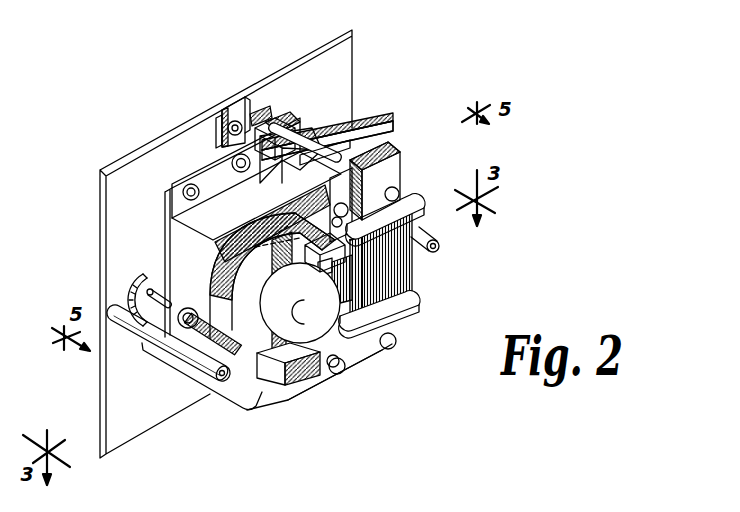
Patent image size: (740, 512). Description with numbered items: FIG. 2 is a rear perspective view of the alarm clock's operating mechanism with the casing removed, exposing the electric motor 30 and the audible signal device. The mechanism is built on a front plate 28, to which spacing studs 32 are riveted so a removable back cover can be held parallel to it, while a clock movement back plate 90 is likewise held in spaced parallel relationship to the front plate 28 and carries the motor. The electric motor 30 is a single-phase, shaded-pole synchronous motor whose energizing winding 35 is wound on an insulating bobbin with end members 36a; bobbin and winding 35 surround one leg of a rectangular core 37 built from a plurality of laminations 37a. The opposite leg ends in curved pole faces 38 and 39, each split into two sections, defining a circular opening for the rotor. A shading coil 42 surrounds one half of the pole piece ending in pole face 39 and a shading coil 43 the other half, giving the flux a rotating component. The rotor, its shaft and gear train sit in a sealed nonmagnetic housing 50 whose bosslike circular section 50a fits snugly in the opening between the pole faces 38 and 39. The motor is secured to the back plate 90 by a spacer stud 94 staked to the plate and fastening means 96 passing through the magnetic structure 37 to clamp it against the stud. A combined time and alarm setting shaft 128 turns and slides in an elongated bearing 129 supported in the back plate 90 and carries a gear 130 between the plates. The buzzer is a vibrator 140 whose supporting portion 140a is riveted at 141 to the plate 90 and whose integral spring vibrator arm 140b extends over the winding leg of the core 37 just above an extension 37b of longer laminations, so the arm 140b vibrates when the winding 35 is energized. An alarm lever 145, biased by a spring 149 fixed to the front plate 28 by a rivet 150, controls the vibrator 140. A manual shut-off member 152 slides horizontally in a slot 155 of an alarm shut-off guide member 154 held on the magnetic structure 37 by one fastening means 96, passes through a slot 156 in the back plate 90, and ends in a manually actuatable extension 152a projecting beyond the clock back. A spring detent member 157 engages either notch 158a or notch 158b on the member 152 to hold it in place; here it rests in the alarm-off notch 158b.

The front plate 28 is at (126, 160).
The electric motor 30 is at (366, 368).
The spacing studs 32 is at (190, 358).
The energizing winding 35 is at (415, 275).
The end members 36a is at (414, 200).
The laminated core 37 is at (383, 352).
The laminations 37a is at (268, 246).
The lamination extension 37b is at (384, 157).
The pole face 38 is at (300, 306).
The pole face 39 is at (290, 322).
The shading coil 42 is at (336, 268).
The shading coil 43 is at (290, 386).
The rotor and gear housing 50 is at (212, 247).
The bosslike circular section 50a is at (346, 300).
The back plate 90 is at (165, 243).
The spacer stud 94 is at (284, 216).
The fastening means 96 is at (334, 376).
The combined time and alarm setting shaft 128 is at (198, 312).
The elongated bearing 129 is at (162, 298).
The gear 130 is at (147, 284).
The vibrator 140 is at (376, 116).
The supporting portion 140a is at (214, 160).
The spring vibrator arm 140b is at (388, 122).
The rivets 141 is at (182, 186).
The alarm lever 145 is at (247, 98).
The spring 149 is at (220, 120).
The rivet 150 is at (232, 108).
The manual shut-off member 152 is at (290, 136).
The manually actuatable extension 152a is at (400, 170).
The alarm shut-off guide member 154 is at (292, 230).
The slot 155 is at (330, 156).
The slot 156 is at (274, 126).
The spring detent member 157 is at (258, 192).
The notch 158a is at (280, 120).
The alarm off notch 158b is at (313, 140).